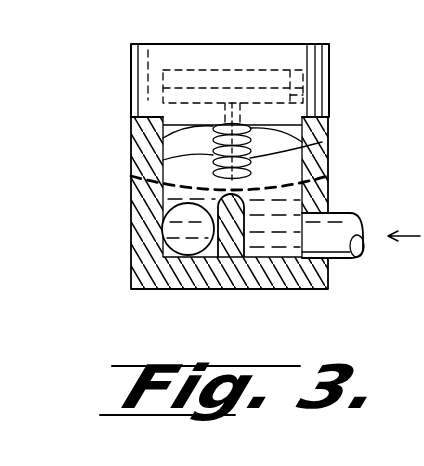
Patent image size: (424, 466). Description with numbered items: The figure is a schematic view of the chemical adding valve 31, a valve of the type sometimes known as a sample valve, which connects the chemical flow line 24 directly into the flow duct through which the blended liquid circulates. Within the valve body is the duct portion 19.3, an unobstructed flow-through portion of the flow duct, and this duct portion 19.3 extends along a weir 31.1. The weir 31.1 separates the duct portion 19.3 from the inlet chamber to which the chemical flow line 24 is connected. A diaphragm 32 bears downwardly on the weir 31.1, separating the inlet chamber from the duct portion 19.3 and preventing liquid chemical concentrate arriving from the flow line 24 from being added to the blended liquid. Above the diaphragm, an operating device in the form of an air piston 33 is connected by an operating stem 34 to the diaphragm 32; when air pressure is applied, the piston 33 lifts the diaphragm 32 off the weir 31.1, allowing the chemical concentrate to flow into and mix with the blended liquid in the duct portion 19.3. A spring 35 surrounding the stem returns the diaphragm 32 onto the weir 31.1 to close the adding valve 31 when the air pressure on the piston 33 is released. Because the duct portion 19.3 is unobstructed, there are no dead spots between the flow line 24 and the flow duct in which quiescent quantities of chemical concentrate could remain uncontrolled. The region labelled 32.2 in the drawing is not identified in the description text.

The air piston 33 is at (280, 56).
The chemical adding valve 31 is at (327, 90).
The spring 35 is at (150, 137).
The operating stem 34 is at (165, 160).
The diaphragm 32 is at (322, 143).
The chemical flow line 24 is at (337, 238).
The duct portion 19.3 is at (180, 230).
The weir 31.1 is at (230, 225).
The chamber 32.2 is at (287, 245).